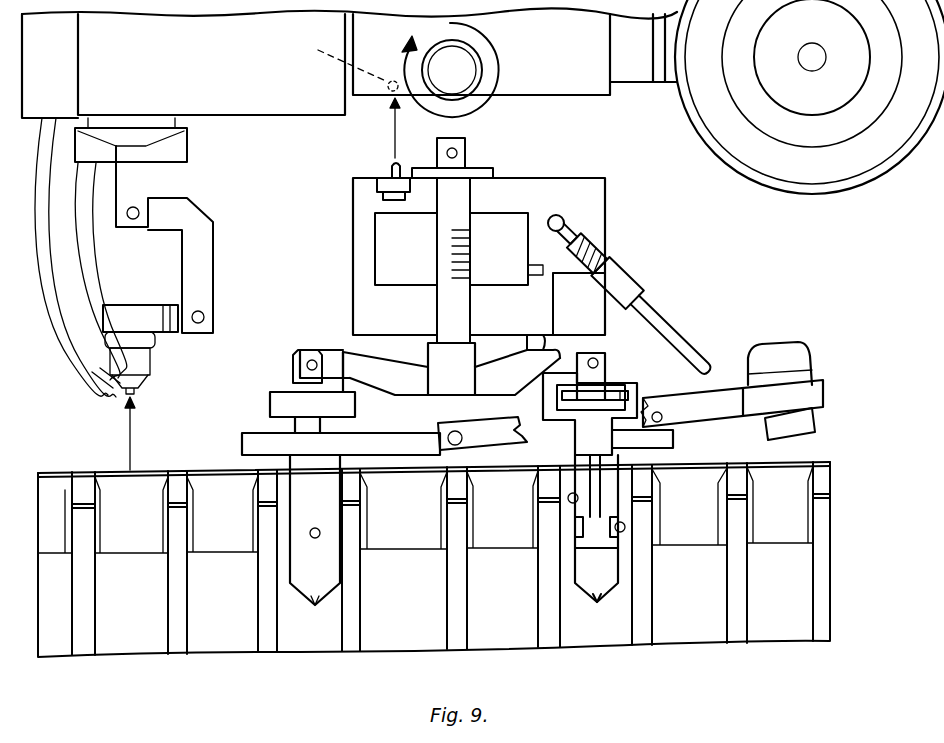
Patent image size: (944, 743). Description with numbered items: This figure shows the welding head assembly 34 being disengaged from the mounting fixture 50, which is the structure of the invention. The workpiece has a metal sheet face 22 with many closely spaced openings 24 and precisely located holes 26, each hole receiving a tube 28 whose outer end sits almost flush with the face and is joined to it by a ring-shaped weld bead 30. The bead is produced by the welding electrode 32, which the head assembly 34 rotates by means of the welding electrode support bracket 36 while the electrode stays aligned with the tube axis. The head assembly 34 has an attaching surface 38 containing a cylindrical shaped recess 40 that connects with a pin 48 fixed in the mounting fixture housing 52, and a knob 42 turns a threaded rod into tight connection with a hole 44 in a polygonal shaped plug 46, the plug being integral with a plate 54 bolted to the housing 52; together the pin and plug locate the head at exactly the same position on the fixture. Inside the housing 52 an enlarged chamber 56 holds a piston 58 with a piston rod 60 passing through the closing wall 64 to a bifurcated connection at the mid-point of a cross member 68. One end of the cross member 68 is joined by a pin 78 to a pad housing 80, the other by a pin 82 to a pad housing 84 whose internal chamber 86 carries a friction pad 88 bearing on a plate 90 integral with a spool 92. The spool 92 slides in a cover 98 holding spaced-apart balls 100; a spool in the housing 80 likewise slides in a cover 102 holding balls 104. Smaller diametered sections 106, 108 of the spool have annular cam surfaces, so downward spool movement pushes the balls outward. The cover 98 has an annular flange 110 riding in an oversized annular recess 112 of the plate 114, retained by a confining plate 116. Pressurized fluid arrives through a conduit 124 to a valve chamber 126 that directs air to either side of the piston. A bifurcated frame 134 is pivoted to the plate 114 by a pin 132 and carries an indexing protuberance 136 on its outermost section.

The sheet face 22 is at (735, 478).
The openings 24 is at (806, 522).
The holes 26 is at (220, 493).
The tube 28 is at (290, 640).
The weld bead 30 is at (96, 470).
The welding electrode 32 is at (140, 392).
The welding head assembly 34 is at (842, 203).
The welding electrode support bracket 36 is at (210, 200).
The attaching surface 38 is at (565, 92).
The cylindrical shaped recess 40 is at (392, 90).
The knob 42 is at (465, 68).
The hole 44 is at (455, 150).
The polygonal shaped plug 46 is at (467, 163).
The pin 48 is at (390, 166).
The mounting fixture 50 is at (676, 258).
The mounting fixture housing 52 is at (588, 196).
The plate 54 is at (493, 173).
The enlarged chamber 56 is at (396, 218).
The piston 58 is at (388, 234).
The piston rod 60 is at (452, 208).
The closing wall 64 is at (542, 306).
The cross member 68 is at (530, 355).
The pin 78 is at (316, 358).
The pad housing 80 is at (290, 392).
The pin 82 is at (600, 360).
The pad housing 84 is at (613, 385).
The internal chamber 86 is at (630, 391).
The friction pad 88 is at (600, 388).
The plate 90 is at (663, 414).
The spool 92 is at (572, 470).
The cover 98 is at (620, 488).
The balls 100 is at (568, 500).
The cover 102 is at (300, 558).
The balls 104 is at (320, 537).
The smaller diametered section 106 is at (610, 515).
The smaller diametered section 108 is at (605, 560).
The annular flange 110 is at (673, 444).
The oversized annular recess 112 is at (520, 440).
The plate 114 is at (408, 372).
The confining plate 116 is at (540, 395).
The conduit 124 is at (657, 313).
The valve chamber 126 is at (565, 221).
The pin 132 is at (470, 455).
The bifurcated frame 134 is at (728, 388).
The indexing protuberance 136 is at (812, 360).